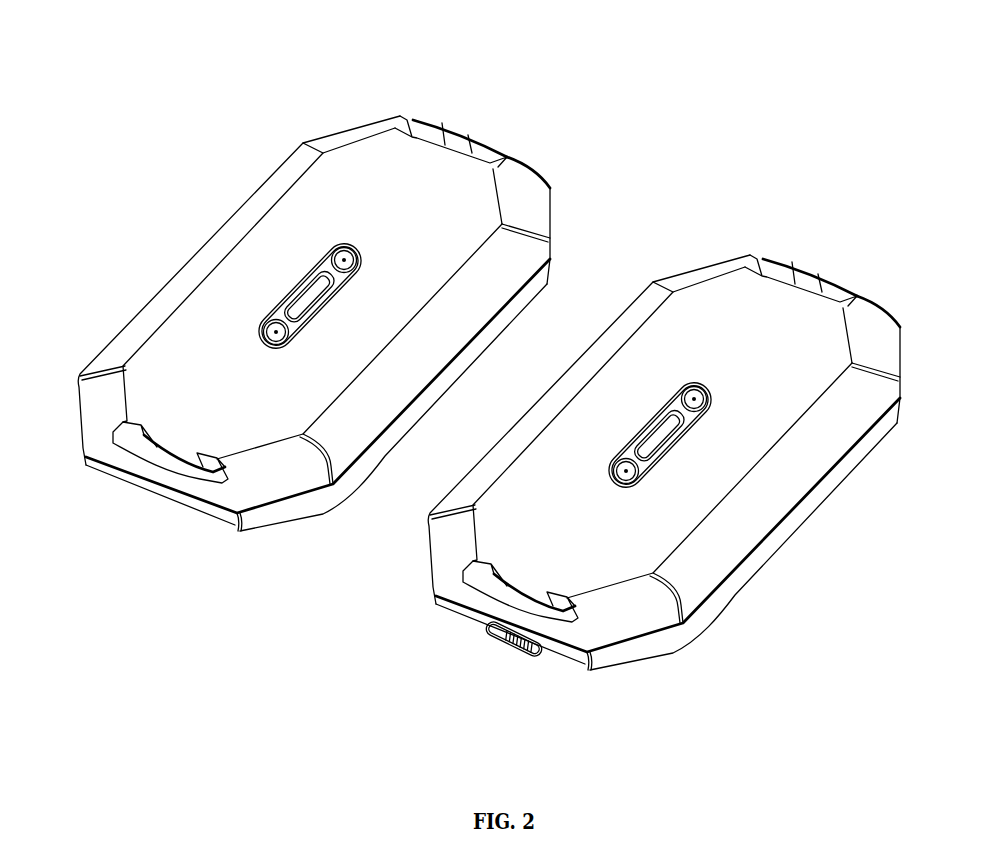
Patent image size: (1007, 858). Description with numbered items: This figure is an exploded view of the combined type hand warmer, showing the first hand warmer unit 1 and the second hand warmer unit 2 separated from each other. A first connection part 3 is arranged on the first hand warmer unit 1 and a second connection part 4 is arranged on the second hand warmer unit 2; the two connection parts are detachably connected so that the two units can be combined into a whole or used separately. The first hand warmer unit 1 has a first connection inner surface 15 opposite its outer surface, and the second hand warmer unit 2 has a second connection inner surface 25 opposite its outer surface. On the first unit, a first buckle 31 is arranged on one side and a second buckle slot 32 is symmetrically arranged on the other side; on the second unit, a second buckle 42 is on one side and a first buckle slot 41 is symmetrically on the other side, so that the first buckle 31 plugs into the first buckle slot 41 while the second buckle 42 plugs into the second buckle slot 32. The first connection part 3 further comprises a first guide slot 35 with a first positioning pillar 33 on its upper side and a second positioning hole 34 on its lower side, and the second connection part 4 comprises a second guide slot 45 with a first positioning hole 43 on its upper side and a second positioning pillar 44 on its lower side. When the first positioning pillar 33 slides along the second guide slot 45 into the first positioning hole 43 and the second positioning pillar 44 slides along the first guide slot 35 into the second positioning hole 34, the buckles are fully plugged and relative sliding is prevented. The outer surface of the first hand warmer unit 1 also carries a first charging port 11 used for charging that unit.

The first hand warmer unit 1 is at (666, 463).
The second hand warmer unit 2 is at (298, 330).
The first connection part 3 is at (666, 417).
The second connection part 4 is at (298, 303).
The first charging port 11 is at (510, 645).
The first connection inner surface 15 is at (577, 543).
The second connection inner surface 25 is at (350, 437).
The first buckle 31 is at (787, 280).
The second buckle slot 32 is at (472, 596).
The first positioning pillar 33 is at (693, 397).
The second positioning hole 34 is at (640, 480).
The first guide slot 35 is at (695, 432).
The first buckle slot 41 is at (468, 88).
The second buckle 42 is at (156, 509).
The first positioning hole 43 is at (294, 158).
The second positioning pillar 44 is at (167, 301).
The second guide slot 45 is at (213, 273).